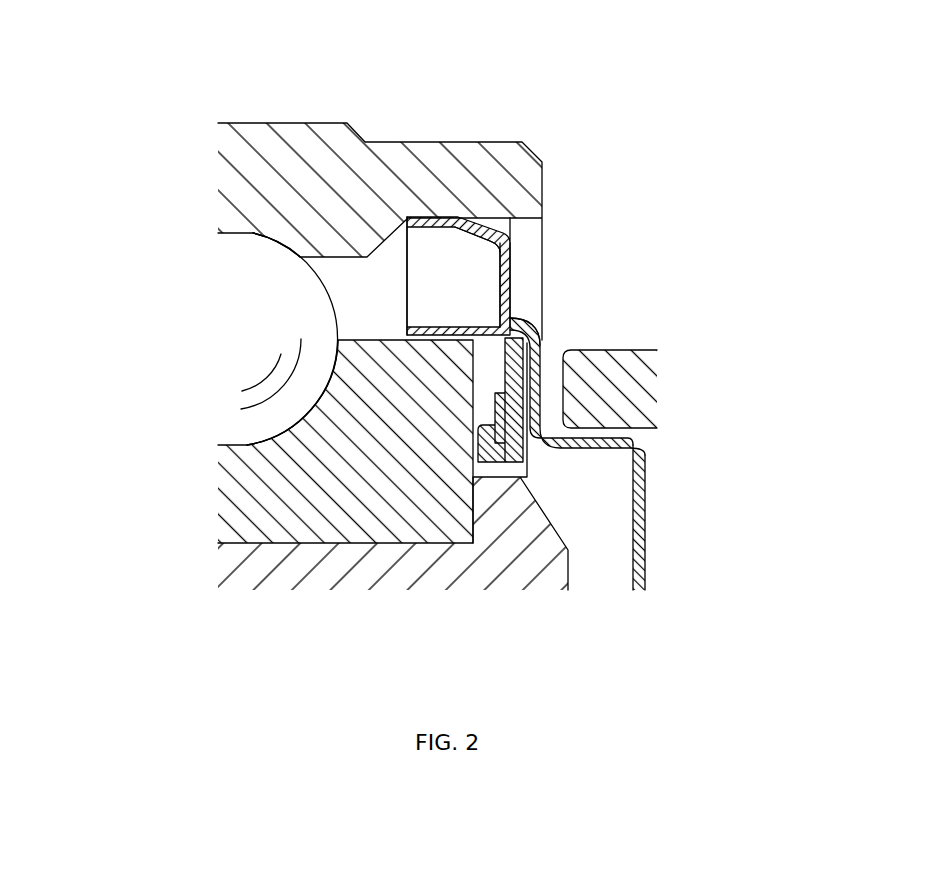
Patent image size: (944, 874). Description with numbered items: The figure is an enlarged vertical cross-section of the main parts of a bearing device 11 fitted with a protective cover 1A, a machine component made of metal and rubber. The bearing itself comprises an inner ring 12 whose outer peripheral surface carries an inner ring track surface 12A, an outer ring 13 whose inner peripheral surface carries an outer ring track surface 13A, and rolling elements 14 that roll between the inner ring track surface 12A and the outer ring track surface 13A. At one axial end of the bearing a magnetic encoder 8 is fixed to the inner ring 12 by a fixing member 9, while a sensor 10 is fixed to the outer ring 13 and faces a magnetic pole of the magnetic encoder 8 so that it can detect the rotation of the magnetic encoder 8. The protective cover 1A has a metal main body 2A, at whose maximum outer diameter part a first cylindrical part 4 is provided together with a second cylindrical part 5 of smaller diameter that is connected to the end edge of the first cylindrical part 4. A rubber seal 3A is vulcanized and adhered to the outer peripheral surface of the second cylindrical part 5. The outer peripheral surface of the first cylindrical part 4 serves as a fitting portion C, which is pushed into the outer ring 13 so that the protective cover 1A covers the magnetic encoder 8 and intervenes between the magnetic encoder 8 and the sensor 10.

The bearing device 11 is at (277, 100).
The outer ring 13 is at (242, 153).
The outer ring track surface 13A is at (252, 238).
The rolling elements 14 is at (282, 263).
The inner ring 12 is at (313, 527).
The inner ring track surface 12A is at (247, 443).
The fitting portion C is at (447, 217).
The first cylindrical part 4 is at (413, 269).
The second cylindrical part 5 is at (480, 238).
The seal 3A is at (514, 229).
The fixing member 9 is at (503, 303).
The magnetic encoder 8 is at (545, 350).
The sensor 10 is at (640, 350).
The protective cover 1A is at (667, 492).
The main body 2A is at (643, 553).